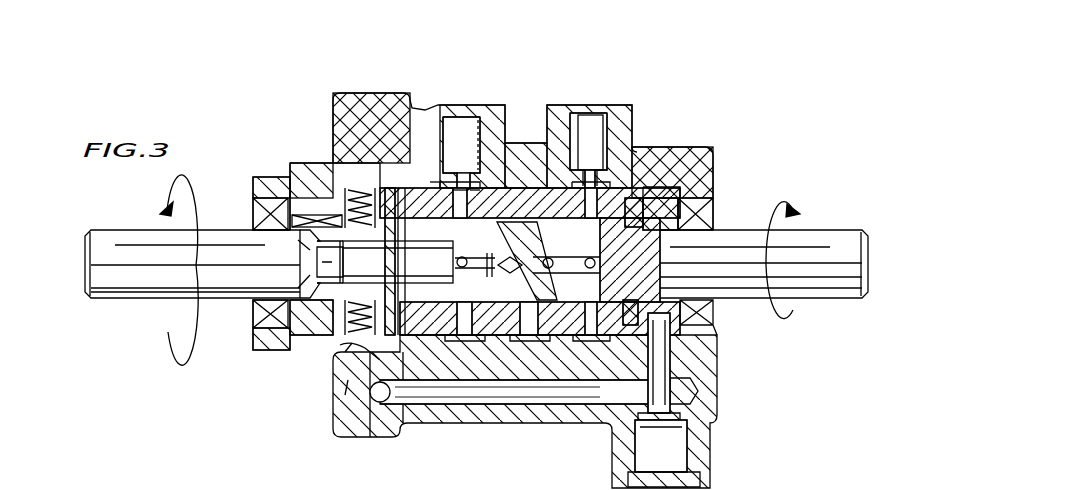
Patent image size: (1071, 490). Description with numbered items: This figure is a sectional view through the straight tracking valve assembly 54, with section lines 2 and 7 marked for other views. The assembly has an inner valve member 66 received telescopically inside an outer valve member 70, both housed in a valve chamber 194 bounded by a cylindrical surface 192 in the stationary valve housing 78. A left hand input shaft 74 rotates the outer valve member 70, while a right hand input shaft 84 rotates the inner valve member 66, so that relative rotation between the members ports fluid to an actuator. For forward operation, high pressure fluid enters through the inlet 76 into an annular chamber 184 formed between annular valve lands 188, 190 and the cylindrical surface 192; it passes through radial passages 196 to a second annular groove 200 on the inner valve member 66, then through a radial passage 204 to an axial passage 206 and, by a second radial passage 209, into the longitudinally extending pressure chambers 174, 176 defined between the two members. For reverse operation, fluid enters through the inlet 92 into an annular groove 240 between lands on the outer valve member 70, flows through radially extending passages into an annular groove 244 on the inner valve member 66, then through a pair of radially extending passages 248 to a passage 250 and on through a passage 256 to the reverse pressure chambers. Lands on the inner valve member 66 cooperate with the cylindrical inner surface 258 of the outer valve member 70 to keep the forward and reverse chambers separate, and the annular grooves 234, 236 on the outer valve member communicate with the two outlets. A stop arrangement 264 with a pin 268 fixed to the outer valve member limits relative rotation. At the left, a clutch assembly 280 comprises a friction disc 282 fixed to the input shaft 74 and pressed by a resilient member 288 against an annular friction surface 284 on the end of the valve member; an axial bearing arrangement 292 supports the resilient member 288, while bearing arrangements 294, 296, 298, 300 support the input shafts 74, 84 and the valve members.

The straight tracking valve assembly 54 is at (818, 107).
The left hand input shaft 74 is at (92, 264).
The right hand input shaft 84 is at (862, 264).
The inlet 76 is at (463, 104).
The inlet 92 is at (588, 105).
The valve housing 78 is at (265, 177).
The outer valve member 70 is at (560, 300).
The inner valve member 66 is at (560, 340).
The annular chamber 184 is at (465, 175).
The annular valve land 188 is at (437, 190).
The annular valve land 190 is at (477, 190).
The cylindrical surface 192 is at (353, 197).
The valve chamber 194 is at (350, 190).
The radial passages 196 is at (463, 190).
The second annular groove 200 is at (490, 320).
The radial passage 204 is at (455, 240).
The axial passage 206 is at (472, 250).
The second radial passage 209 is at (497, 268).
The pressure chamber 174 is at (503, 296).
The pressure chamber 176 is at (538, 225).
The annular groove 234 is at (534, 391).
The annular groove 236 is at (515, 330).
The annular groove 240 is at (635, 148).
The annular groove 244 is at (643, 190).
The radially extending passages 248 is at (713, 318).
The passage 250 is at (598, 248).
The passage 256 is at (548, 265).
The cylindrical inner surface 258 is at (600, 317).
The stop arrangement 264 is at (387, 175).
The pin 268 is at (353, 262).
The clutch assembly 280 is at (338, 345).
The friction disc 282 is at (352, 343).
The annular friction surface 284 is at (347, 385).
The resilient member 288 is at (337, 208).
The axial bearing arrangement 292 is at (335, 332).
The bearing 294 is at (256, 218).
The bearing arrangement 296 is at (255, 314).
The bearing arrangement 298 is at (645, 200).
The bearing 300 is at (708, 200).
The section line 2 is at (533, 293).
The section line 7 is at (408, 171).